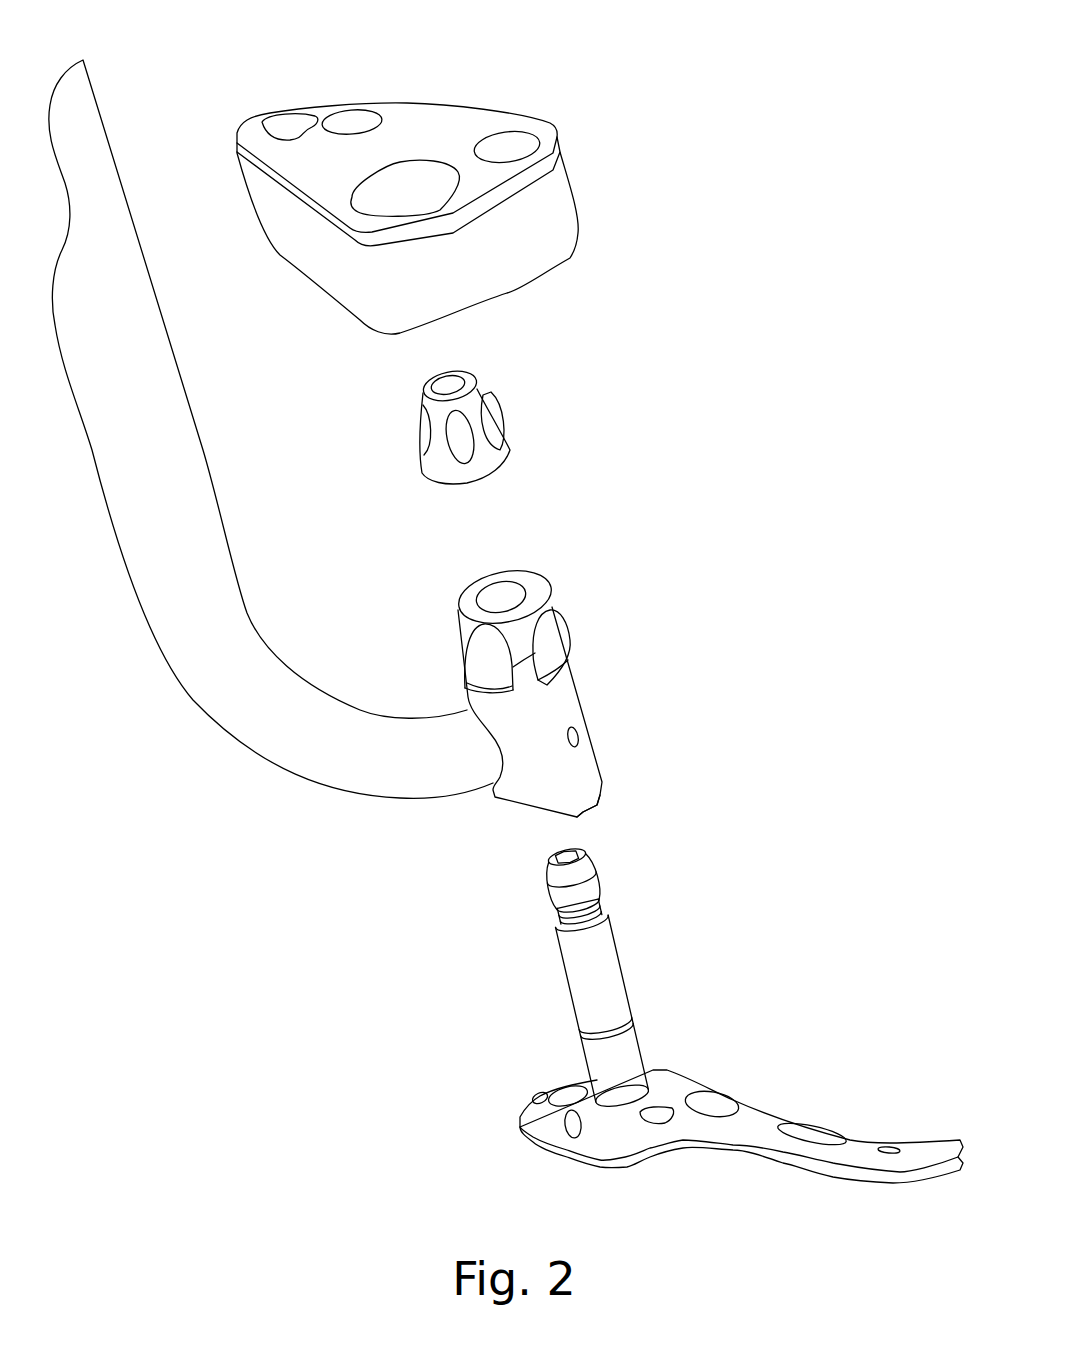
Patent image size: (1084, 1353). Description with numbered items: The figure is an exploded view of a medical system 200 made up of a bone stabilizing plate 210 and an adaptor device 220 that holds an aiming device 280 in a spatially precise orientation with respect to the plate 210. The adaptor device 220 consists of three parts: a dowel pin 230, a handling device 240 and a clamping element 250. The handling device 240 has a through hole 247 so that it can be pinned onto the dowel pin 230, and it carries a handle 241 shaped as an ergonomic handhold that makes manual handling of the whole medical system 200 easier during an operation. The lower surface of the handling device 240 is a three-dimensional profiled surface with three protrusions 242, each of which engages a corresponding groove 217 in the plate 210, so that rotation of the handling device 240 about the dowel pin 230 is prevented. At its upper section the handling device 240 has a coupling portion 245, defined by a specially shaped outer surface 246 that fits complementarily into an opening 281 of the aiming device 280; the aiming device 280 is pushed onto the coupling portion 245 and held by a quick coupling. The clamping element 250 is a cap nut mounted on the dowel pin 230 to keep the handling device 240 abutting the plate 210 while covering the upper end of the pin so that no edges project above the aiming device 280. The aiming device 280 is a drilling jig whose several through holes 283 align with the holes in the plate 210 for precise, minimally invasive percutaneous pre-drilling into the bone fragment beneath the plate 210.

The medical system 200 is at (787, 97).
The plate 210 is at (867, 1145).
The groove 217 is at (662, 1118).
The adaptor device 220 is at (635, 342).
The dowel pin 230 is at (607, 963).
The handling device 240 is at (588, 758).
The handle 241 is at (218, 713).
The protrusion 242 is at (595, 813).
The coupling portion 245 is at (592, 562).
The outer surface 246 is at (475, 668).
The through hole 247 is at (518, 588).
The clamping element 250 is at (497, 457).
The aiming device 280 is at (558, 208).
The opening 281 is at (417, 178).
The through holes 283 is at (353, 118).